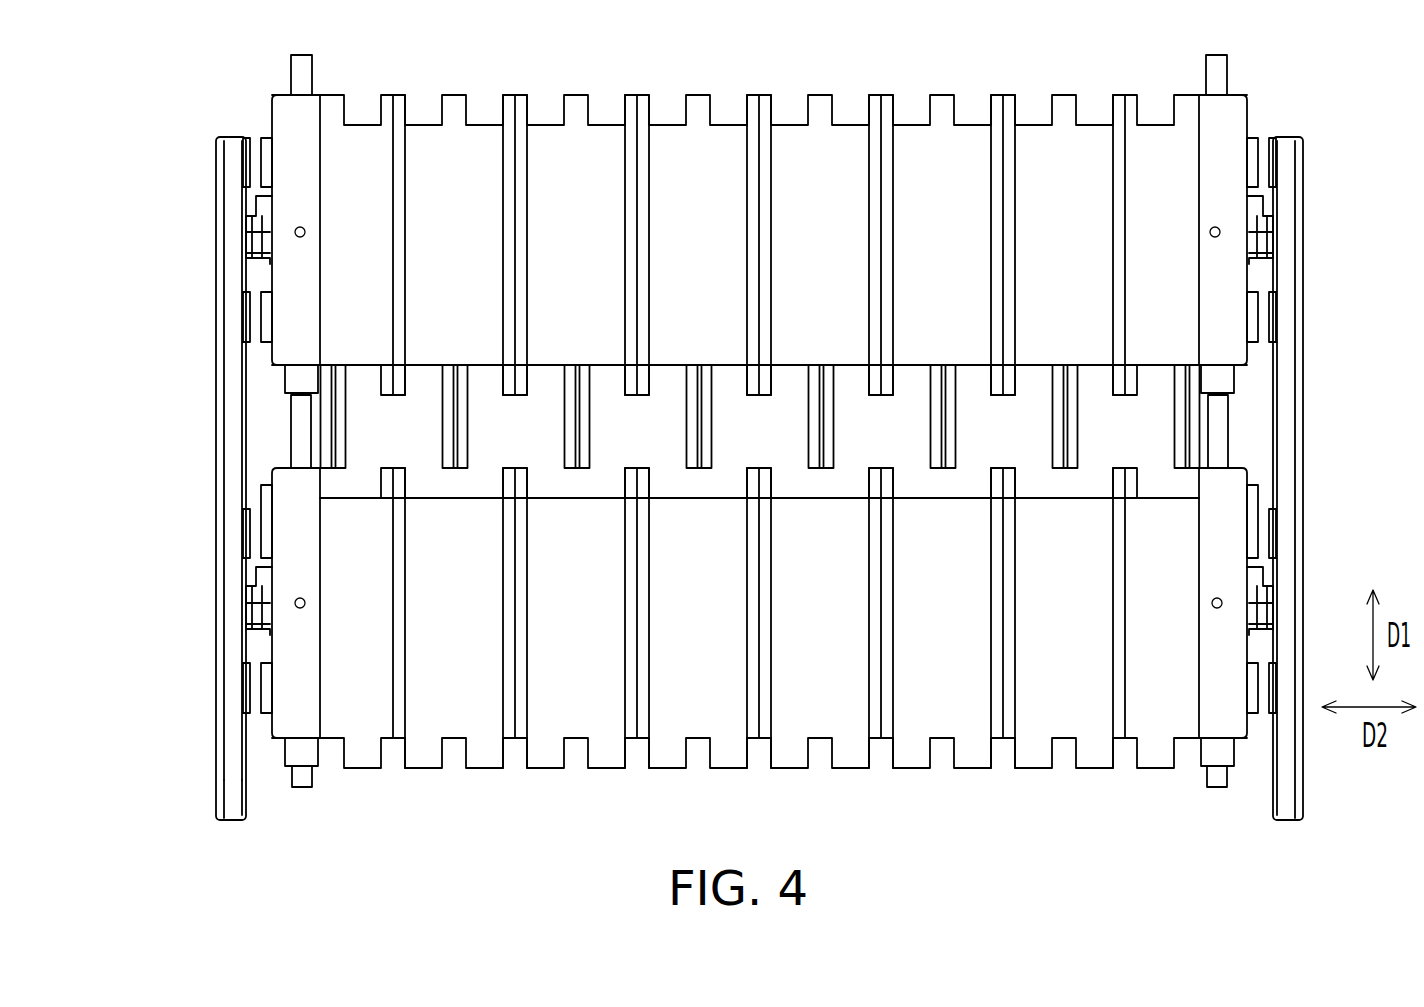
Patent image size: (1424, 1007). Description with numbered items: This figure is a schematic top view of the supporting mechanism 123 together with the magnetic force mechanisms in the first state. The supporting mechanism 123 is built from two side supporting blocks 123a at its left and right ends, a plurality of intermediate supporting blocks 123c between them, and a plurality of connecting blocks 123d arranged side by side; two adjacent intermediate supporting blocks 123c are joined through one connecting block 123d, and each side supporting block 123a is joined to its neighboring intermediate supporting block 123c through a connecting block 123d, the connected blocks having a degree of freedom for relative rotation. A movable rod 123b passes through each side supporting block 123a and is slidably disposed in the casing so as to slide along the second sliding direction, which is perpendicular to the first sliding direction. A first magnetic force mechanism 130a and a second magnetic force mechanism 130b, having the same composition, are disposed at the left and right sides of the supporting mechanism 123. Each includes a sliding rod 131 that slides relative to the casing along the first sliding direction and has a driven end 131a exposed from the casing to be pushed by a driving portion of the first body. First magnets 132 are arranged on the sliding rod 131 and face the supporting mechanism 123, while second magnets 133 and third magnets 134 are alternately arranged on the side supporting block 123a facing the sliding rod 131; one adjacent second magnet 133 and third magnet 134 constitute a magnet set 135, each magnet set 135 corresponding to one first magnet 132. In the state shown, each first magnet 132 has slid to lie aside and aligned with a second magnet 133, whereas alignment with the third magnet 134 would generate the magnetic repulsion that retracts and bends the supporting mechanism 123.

The supporting mechanism 123 is at (118, 47).
The side supporting block 123a is at (1317, 112).
The movable rod 123b is at (1283, 57).
The intermediate supporting block 123c is at (935, 825).
The connecting block 123d is at (1333, 403).
The first magnetic force mechanism 130a is at (242, 846).
The second magnetic force mechanism 130b is at (1290, 849).
The sliding rod 131 is at (230, 659).
The driven end 131a is at (232, 800).
The first magnet 132 is at (242, 312).
The second magnet 133 is at (263, 338).
The third magnet 134 is at (263, 279).
The magnet set 135 is at (177, 449).